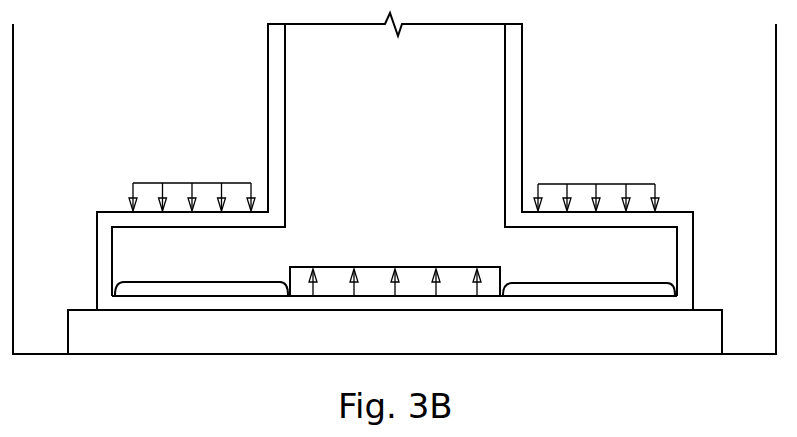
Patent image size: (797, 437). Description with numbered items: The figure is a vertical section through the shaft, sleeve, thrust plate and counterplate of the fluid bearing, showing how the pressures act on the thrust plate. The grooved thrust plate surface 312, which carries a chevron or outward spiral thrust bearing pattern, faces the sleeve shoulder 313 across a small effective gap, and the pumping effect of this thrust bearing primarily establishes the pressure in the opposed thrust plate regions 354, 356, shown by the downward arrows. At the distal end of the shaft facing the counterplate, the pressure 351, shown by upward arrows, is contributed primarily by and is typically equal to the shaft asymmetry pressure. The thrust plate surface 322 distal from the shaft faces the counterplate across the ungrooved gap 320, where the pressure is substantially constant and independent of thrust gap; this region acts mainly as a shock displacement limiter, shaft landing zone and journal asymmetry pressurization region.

The sleeve shoulder 313 is at (118, 211).
The thrust plate surface 312 is at (192, 227).
The thrust plate surface distal from the shaft 322 is at (628, 297).
The gap 320 is at (655, 305).
The adjacent region 354 is at (202, 282).
The adjacent region 356 is at (588, 283).
The pressure 351 is at (350, 267).